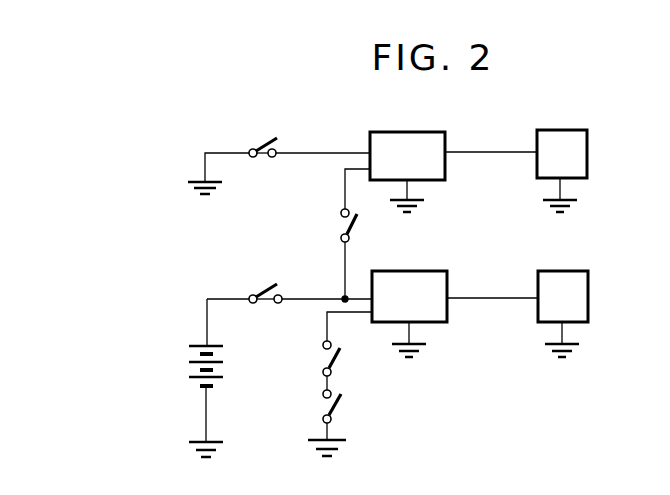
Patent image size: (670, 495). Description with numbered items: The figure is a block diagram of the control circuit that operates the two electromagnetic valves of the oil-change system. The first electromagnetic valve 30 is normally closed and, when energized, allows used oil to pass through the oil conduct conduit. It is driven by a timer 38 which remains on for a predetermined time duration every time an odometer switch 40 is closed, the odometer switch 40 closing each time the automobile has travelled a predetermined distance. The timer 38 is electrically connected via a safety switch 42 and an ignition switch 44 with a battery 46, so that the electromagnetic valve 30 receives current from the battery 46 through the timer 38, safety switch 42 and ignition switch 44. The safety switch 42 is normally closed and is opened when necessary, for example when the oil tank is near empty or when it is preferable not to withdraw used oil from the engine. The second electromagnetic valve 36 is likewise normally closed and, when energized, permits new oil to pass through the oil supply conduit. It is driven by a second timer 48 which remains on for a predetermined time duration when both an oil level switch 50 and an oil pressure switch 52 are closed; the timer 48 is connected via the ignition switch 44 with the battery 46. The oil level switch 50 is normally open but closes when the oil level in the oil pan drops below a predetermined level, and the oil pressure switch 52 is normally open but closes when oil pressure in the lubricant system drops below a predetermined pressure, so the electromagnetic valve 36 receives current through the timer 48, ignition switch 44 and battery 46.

The electromagnetic valve 30 is at (560, 130).
The electromagnetic valve 36 is at (567, 271).
The timer 38 is at (410, 132).
The odometer switch 40 is at (266, 132).
The safety switch 42 is at (343, 228).
The ignition switch 44 is at (265, 290).
The battery 46 is at (190, 370).
The timer 48 is at (422, 271).
The oil level switch 50 is at (325, 360).
The oil pressure switch 52 is at (325, 407).